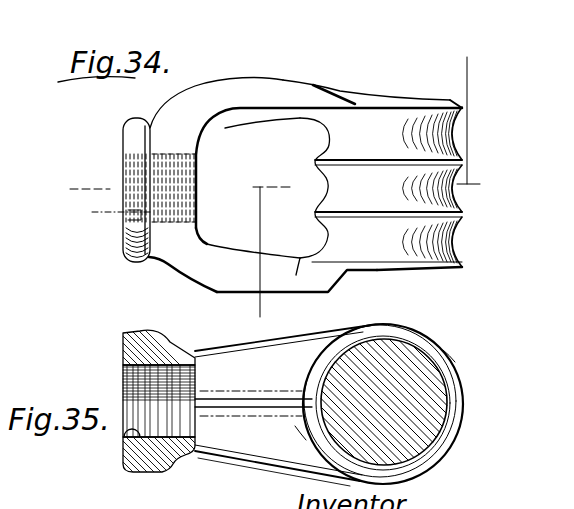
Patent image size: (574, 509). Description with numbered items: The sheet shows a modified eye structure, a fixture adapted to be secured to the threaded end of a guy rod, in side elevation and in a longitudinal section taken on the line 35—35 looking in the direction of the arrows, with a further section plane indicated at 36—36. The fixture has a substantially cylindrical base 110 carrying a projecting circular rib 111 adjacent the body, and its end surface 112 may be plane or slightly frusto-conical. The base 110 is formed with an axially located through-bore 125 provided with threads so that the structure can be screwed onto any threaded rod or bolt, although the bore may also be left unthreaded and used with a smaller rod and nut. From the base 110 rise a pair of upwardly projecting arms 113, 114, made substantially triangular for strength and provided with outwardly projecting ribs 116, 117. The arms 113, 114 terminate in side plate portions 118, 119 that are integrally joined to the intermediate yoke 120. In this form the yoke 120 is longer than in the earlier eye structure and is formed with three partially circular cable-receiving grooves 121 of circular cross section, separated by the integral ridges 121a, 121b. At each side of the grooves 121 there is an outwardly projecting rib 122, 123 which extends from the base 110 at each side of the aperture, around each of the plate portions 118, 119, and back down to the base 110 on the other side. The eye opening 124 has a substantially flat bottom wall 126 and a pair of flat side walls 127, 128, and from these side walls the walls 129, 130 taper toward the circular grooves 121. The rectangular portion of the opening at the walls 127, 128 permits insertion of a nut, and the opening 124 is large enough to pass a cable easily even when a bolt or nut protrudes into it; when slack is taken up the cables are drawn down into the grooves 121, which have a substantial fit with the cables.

In FIG. 34, the base 110 is at (148, 263).
In FIG. 35, the base 110 is at (167, 331).
In FIG. 34, the projecting circular rib 111 is at (125, 244).
In FIG. 35, the projecting circular rib 111 is at (131, 333).
In FIG. 34, the frusto-conical end surface 112 is at (122, 218).
In FIG. 35, the frusto-conical end surface 112 is at (126, 353).
In FIG. 34, the arm 113 is at (212, 286).
In FIG. 34, the arm 114 is at (290, 73).
In FIG. 35, the arm 114 is at (262, 381).
In FIG. 34, the outwardly projecting rib 116 is at (185, 88).
In FIG. 34, the outwardly projecting rib 117 is at (195, 282).
In FIG. 34, the side plate portion 118 is at (380, 100).
In FIG. 34, the side plate portion 119 is at (418, 270).
In FIG. 34, the yoke 120 is at (345, 122).
In FIG. 35, the yoke 120 is at (344, 367).
In FIG. 34, the cable-receiving groove 121 is at (326, 141).
In FIG. 35, the cable-receiving groove 121 is at (437, 443).
In FIG. 34, the integral ridge 121a is at (373, 154).
In FIG. 35, the integral ridge 121a is at (467, 340).
In FIG. 34, the integral ridge 121b is at (375, 206).
In FIG. 34, the outwardly projecting rib 122 is at (390, 105).
In FIG. 34, the outwardly projecting rib 123 is at (373, 271).
In FIG. 34, the eye opening 124 is at (217, 150).
In FIG. 35, the eye opening 124 is at (256, 444).
In FIG. 34, the through-bore 125 is at (97, 209).
In FIG. 35, the through-bore 125 is at (124, 436).
In FIG. 34, the flat bottom wall 126 is at (197, 178).
In FIG. 35, the flat bottom wall 126 is at (175, 350).
In FIG. 34, the flat side wall 127 is at (230, 133).
In FIG. 35, the flat side wall 127 is at (206, 448).
In FIG. 34, the flat side wall 128 is at (233, 225).
In FIG. 34, the tapering wall 129 is at (313, 83).
In FIG. 35, the tapering wall 129 is at (295, 426).
In FIG. 34, the tapering wall 130 is at (296, 275).
In FIG. 34, the section line 35— 35 is at (87, 190).
In FIG. 34, the section line 36— 36 is at (273, 308).